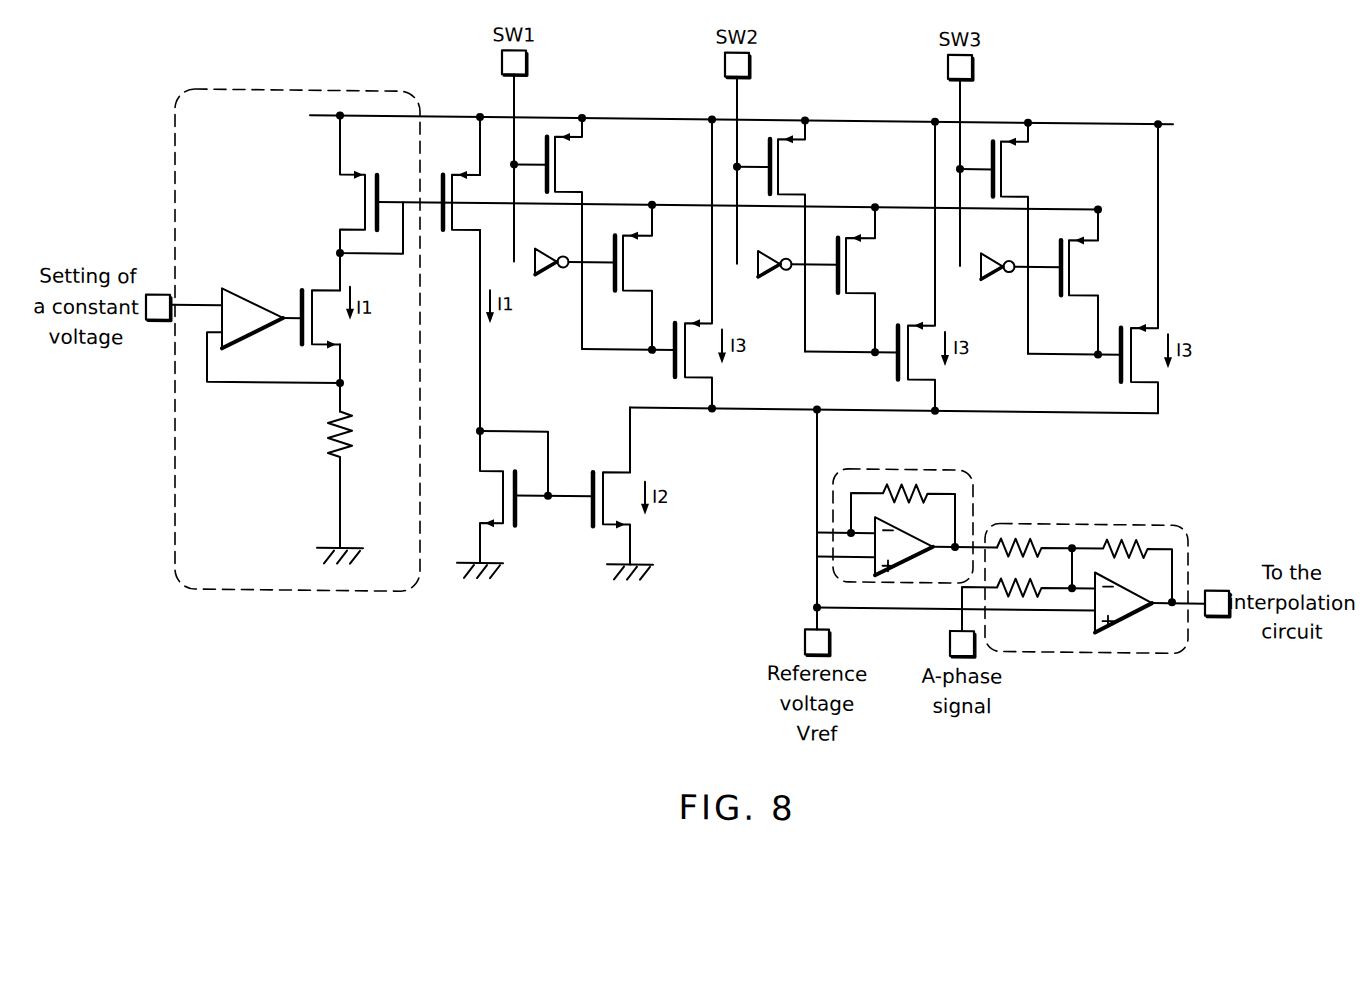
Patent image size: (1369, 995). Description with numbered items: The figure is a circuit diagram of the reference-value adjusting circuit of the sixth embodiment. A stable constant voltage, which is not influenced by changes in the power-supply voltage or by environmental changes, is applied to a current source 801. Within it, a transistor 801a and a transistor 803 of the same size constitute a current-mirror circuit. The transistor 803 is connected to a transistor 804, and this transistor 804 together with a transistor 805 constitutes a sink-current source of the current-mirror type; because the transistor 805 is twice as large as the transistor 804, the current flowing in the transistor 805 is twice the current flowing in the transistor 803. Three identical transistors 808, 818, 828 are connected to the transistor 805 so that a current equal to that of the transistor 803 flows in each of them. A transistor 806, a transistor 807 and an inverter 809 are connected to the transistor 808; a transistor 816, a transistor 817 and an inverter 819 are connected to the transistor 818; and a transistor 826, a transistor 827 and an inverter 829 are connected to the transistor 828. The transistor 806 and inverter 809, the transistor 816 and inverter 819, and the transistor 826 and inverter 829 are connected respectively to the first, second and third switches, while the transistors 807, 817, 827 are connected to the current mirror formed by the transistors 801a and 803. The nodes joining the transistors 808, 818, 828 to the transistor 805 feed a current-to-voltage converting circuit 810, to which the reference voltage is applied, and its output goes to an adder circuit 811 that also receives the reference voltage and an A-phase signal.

The current source 801 is at (286, 122).
The transistor 801a is at (350, 198).
The transistor 803 is at (462, 152).
The transistor 804 is at (518, 535).
The transistor 805 is at (593, 535).
The transistor 806 is at (583, 152).
The transistor 807 is at (650, 246).
The transistor 808 is at (693, 381).
The inverter 809 is at (551, 274).
The current-to-voltage converting circuit 810 is at (903, 566).
The adder circuit 811 is at (1083, 615).
The transistor 816 is at (803, 153).
The transistor 817 is at (870, 247).
The transistor 818 is at (908, 390).
The inverter 819 is at (776, 272).
The transistor 826 is at (1028, 152).
The transistor 827 is at (1088, 248).
The transistor 828 is at (1139, 380).
The inverter 829 is at (1000, 275).